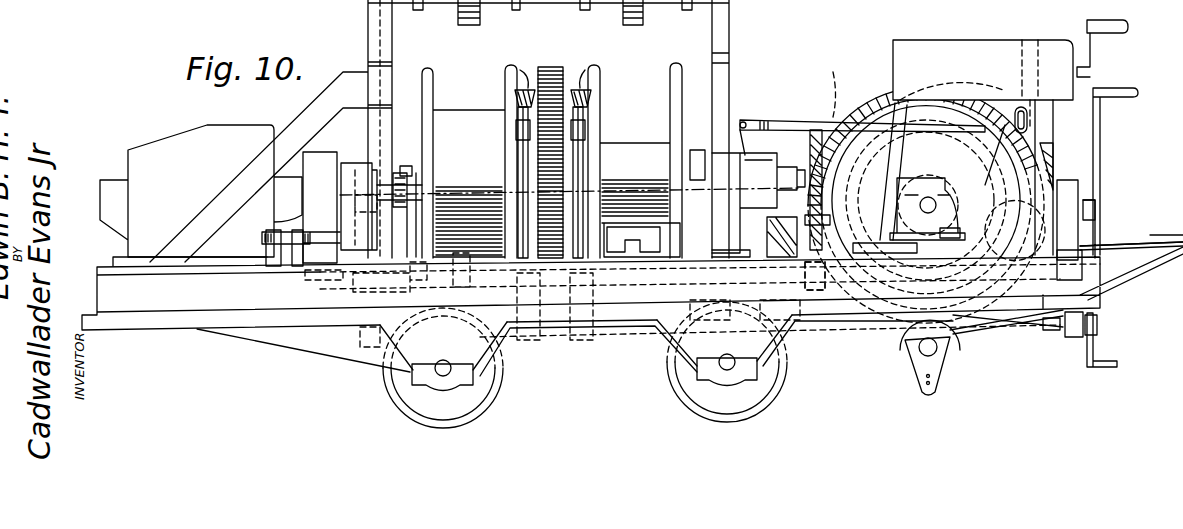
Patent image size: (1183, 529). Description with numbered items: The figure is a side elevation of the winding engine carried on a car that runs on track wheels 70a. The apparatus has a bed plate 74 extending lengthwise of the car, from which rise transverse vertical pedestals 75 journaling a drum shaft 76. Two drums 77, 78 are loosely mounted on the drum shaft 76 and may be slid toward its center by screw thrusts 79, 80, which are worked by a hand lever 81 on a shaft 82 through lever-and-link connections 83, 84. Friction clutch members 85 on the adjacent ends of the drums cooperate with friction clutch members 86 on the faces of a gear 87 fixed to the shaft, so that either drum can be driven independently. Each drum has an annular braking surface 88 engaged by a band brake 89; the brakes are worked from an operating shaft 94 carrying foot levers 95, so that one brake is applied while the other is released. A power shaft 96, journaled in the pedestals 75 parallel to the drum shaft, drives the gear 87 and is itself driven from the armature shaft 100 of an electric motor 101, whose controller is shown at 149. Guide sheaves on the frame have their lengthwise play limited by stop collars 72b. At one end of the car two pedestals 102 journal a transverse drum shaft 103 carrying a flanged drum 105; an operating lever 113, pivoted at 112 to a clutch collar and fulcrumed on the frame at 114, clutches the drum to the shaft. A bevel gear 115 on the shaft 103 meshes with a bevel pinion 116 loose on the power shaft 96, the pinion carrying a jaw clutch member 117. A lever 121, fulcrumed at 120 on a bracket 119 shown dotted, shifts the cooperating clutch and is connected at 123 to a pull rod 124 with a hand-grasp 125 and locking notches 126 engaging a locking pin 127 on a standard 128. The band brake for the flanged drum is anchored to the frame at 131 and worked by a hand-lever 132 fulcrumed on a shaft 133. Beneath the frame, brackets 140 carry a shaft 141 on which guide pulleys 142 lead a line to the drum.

The track wheels 70a is at (496, 390).
The stop collars 72b is at (683, 2).
The bed plate 74 is at (198, 318).
The transverse vertical pedestals 75 is at (368, 42).
The drum shaft 76 is at (357, 180).
The drum 77 is at (452, 126).
The drum 78 is at (640, 152).
The screw thrust 79 is at (404, 168).
The screw thrust 80 is at (765, 168).
The hand lever 81 is at (1100, 140).
The shaft 82 is at (440, 320).
The lever-and-link connection 83 is at (380, 270).
The lever-and-link connection 84 is at (816, 130).
The friction clutch members 85 is at (520, 110).
The friction clutch members 86 is at (518, 140).
The gear 87 is at (550, 67).
The annular braking surfaces 88 is at (516, 98).
The band brakes 89 is at (520, 70).
The operating shaft 94 is at (637, 345).
The foot levers 95 is at (1105, 367).
The power shaft 96 is at (685, 225).
The armature shaft 100 is at (298, 205).
The electric motor 101 is at (228, 136).
The pedestals 102 is at (958, 203).
The drum shaft 103 is at (930, 197).
The flanged drum 105 is at (903, 170).
The pivotal connection 112 is at (930, 255).
The operating lever 113 is at (952, 235).
The fulcrum 114 is at (990, 262).
The bevel gear 115 is at (880, 92).
The bevel pinion 116 is at (810, 262).
The jaw clutch member 117 is at (778, 236).
The bracket 119 is at (730, 320).
The fulcrum 120 is at (790, 320).
The lever 121 is at (780, 130).
The pivotal connection 123 is at (740, 120).
The pull rod 124 is at (833, 72).
The hand-grasp 125 is at (1022, 65).
The locking notches 126 is at (1013, 105).
The locking pin 127 is at (1000, 140).
The standard 128 is at (1055, 162).
The frame connection 131 is at (1050, 330).
The hand-lever 132 is at (1053, 122).
The shaft 133 is at (1080, 250).
The brackets 140 is at (945, 375).
The shaft 141 is at (922, 352).
The guide pulleys 142 is at (960, 350).
The motor controller 149 is at (952, 50).